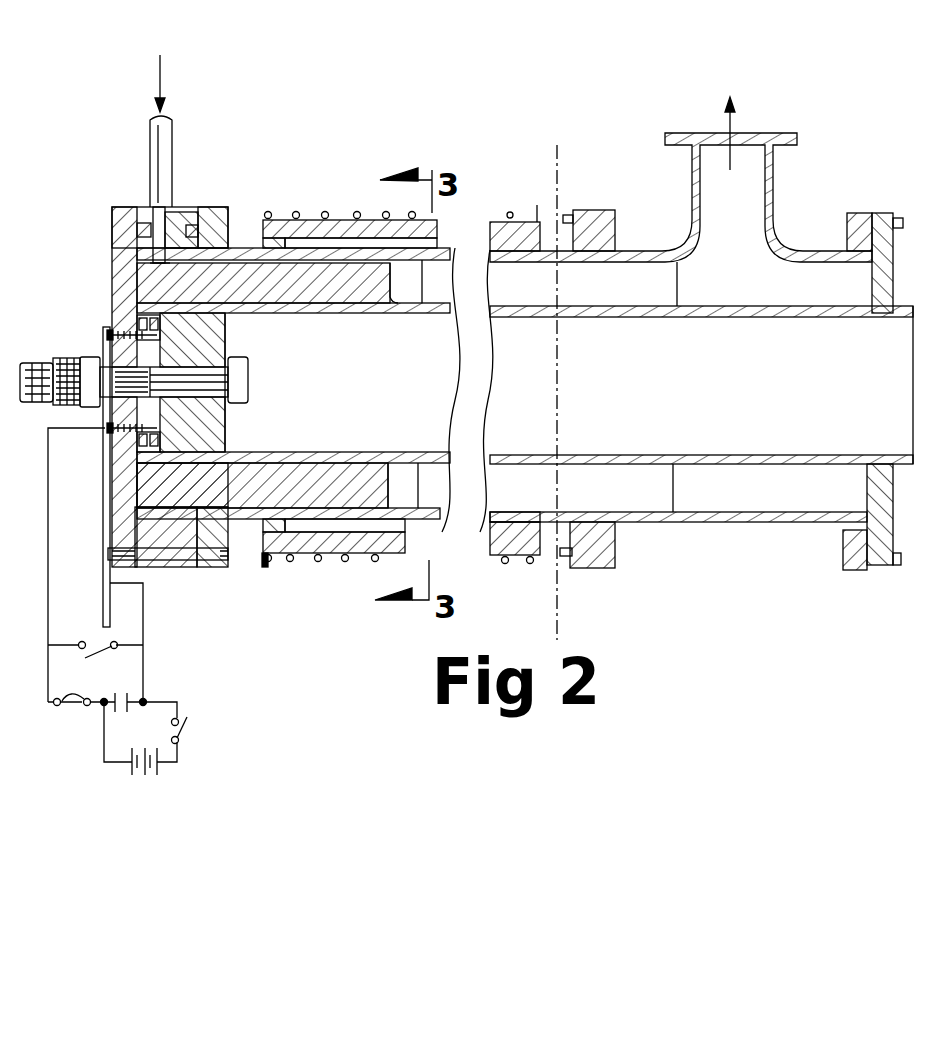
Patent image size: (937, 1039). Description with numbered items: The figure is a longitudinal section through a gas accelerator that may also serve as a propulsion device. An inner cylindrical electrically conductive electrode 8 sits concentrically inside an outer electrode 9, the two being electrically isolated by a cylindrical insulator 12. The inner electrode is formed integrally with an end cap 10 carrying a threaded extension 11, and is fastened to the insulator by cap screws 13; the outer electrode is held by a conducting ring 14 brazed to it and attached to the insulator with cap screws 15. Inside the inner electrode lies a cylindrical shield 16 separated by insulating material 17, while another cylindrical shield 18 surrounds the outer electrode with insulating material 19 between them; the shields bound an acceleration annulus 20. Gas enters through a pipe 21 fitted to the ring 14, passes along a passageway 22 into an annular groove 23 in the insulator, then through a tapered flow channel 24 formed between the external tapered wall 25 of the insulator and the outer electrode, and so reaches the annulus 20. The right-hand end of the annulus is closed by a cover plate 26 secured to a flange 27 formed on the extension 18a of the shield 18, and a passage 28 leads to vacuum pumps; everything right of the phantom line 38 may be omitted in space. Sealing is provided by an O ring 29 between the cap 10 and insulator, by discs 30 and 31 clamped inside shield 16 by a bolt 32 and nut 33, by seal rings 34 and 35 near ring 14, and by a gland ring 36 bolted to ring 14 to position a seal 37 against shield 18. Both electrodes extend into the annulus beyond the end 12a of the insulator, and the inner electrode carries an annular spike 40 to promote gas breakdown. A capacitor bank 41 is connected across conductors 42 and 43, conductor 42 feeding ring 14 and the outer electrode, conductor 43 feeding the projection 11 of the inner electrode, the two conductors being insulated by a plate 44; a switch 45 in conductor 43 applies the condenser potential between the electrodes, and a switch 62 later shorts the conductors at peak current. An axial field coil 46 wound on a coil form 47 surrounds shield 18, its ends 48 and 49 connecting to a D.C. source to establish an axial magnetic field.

The inner cylindrical electrically conductive electrode 8 is at (402, 290).
The outer electrode 9 is at (418, 266).
The end cap 10 is at (144, 383).
The threaded extension 11 is at (75, 355).
The cylindrical insulator 12 is at (112, 262).
The end of the insulator 12a is at (390, 488).
The cap screws 13 is at (106, 445).
The conducting ring 14 is at (166, 537).
The cap screws 15 is at (108, 554).
The cylindrical shield 16 is at (255, 453).
The insulating material 17 is at (333, 453).
The cylindrical shield 18 is at (418, 520).
The extension of shield 18a is at (700, 522).
The insulating material 19 is at (420, 510).
The acceleration space or annulus 20 is at (681, 327).
The pipe 21 is at (172, 148).
The passageway 22 is at (166, 226).
The annular groove 23 is at (158, 258).
The tapered flow channel 24 is at (375, 268).
The external tapered wall 25 is at (330, 266).
The cover plate 26 is at (893, 290).
The flange 27 is at (868, 215).
The passage 28 is at (732, 145).
The O ring 29 is at (130, 320).
The disc 30 is at (192, 382).
The disc 31 is at (226, 432).
The bolt 32 is at (248, 370).
The nut 33 is at (35, 405).
The seal ring 34 is at (230, 550).
The seal ring 35 is at (108, 538).
The gland ring 36 is at (215, 208).
The seal 37 is at (228, 525).
The phantom line 38 is at (560, 157).
The annular spike 40 is at (422, 292).
The capacitor bank 41 is at (130, 705).
The conductor 42 is at (143, 585).
The conductor 43 is at (48, 490).
The plate 44 is at (103, 602).
The switch 45 is at (75, 695).
The axial solenoid or field coil 46 is at (325, 218).
The coil form 47 is at (272, 222).
The end of the solenoid 48 is at (264, 570).
The end of the solenoid 49 is at (540, 212).
The switch 62 is at (105, 650).